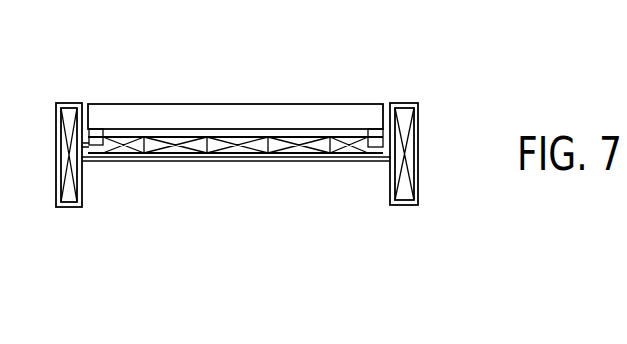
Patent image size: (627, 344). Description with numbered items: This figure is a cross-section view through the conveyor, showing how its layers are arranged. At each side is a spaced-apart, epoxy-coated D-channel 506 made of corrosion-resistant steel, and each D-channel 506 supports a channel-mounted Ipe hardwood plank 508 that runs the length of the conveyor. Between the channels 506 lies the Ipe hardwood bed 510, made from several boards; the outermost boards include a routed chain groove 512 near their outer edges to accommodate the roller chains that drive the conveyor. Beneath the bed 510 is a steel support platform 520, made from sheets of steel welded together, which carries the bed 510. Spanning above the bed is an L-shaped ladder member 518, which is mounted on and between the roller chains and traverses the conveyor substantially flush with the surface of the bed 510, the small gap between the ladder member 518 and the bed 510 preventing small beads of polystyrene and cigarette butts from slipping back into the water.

The ladder member 518 is at (317, 103).
The channel-mounted Ipe hardwood plank 508 is at (417, 168).
The D-channel 506 is at (397, 205).
The routed chain groove 512 is at (96, 151).
The Ipe hardwood bed 510 is at (238, 150).
The steel support platform 520 is at (332, 156).